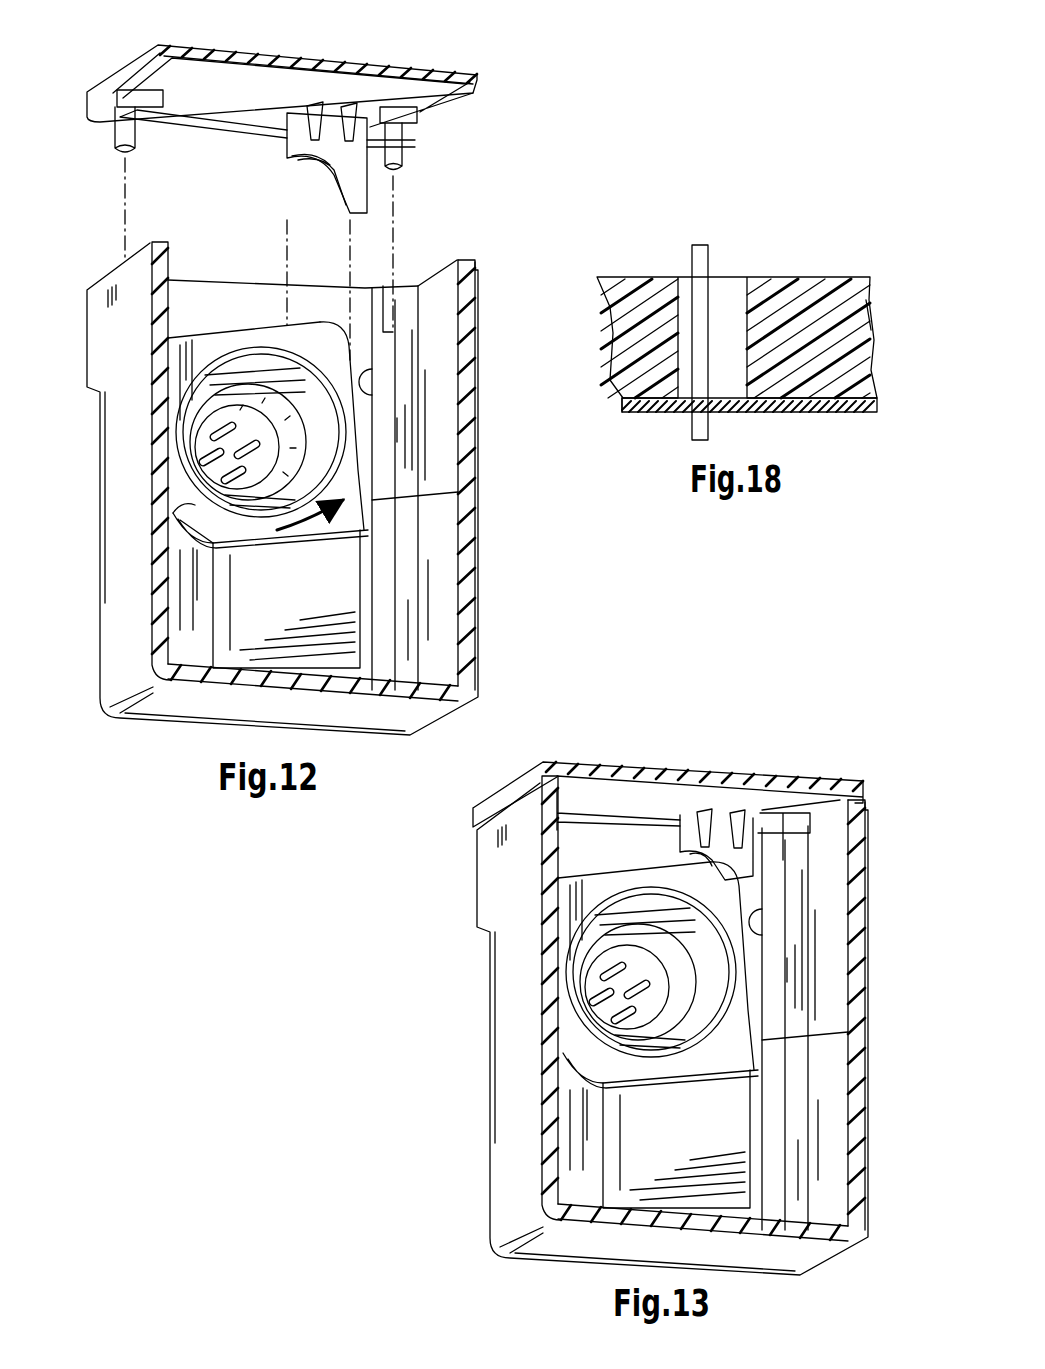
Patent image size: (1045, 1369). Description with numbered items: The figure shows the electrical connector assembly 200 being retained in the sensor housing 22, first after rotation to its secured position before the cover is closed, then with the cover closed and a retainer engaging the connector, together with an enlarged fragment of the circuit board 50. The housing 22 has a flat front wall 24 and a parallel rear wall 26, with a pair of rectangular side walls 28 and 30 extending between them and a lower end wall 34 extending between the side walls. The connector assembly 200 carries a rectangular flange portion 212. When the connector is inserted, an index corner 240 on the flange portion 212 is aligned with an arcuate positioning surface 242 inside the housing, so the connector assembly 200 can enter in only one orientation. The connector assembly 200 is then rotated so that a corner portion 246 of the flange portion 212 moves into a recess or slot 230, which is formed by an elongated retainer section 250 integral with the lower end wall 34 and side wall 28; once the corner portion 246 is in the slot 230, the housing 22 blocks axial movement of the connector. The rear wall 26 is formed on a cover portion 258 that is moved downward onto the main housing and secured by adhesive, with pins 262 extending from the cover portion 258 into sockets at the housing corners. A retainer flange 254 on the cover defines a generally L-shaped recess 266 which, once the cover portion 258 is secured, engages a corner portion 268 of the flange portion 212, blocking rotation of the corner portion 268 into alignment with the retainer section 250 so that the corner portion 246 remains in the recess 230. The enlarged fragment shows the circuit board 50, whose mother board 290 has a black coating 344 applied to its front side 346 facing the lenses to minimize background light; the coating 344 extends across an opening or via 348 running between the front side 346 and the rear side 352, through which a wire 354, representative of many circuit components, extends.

In FIG. 12, the housing 22 is at (149, 724).
In FIG. 13, the housing 22 is at (650, 1029).
In FIG. 12, the front wall 24 is at (332, 710).
In FIG. 13, the front wall 24 is at (681, 1266).
In FIG. 12, the rear wall 26 is at (312, 52).
In FIG. 13, the rear wall 26 is at (799, 770).
In FIG. 12, the side wall 28 is at (467, 532).
In FIG. 13, the side wall 28 is at (879, 1015).
In FIG. 12, the side wall 30 is at (133, 440).
In FIG. 13, the side wall 30 is at (501, 998).
In FIG. 12, the lower end wall 34 is at (225, 300).
In FIG. 18, the circuit board 50 is at (829, 276).
In FIG. 12, the connector assembly 200 is at (192, 372).
In FIG. 13, the connector assembly 200 is at (622, 1028).
In FIG. 12, the flange portion 212 is at (248, 548).
In FIG. 13, the flange portion 212 is at (667, 1119).
In FIG. 12, the recess or slot 230 is at (355, 375).
In FIG. 13, the recess or slot 230 is at (744, 972).
In FIG. 12, the index corner 240 is at (178, 508).
In FIG. 12, the arcuate positioning surface 242 is at (186, 535).
In FIG. 12, the corner portion 246 is at (352, 512).
In FIG. 13, the corner portion 246 is at (840, 1007).
In FIG. 12, the retainer section 250 is at (390, 563).
In FIG. 13, the retainer section 250 is at (850, 1035).
In FIG. 12, the retainer flange 254 is at (364, 194).
In FIG. 13, the retainer flange 254 is at (750, 852).
In FIG. 12, the cover portion 258 is at (488, 89).
In FIG. 13, the cover portion 258 is at (744, 768).
In FIG. 12, the pins 262 is at (117, 134).
In FIG. 12, the L-shaped recess 266 is at (327, 168).
In FIG. 13, the L-shaped recess 266 is at (700, 872).
In FIG. 12, the corner portion 268 is at (313, 337).
In FIG. 13, the corner portion 268 is at (815, 966).
In FIG. 18, the mother board 290 is at (870, 300).
In FIG. 18, the black coating 344 is at (790, 415).
In FIG. 18, the front side 346 is at (628, 402).
In FIG. 18, the opening or via 348 is at (758, 300).
In FIG. 18, the rear side 352 is at (620, 276).
In FIG. 18, the wire 354 is at (693, 262).